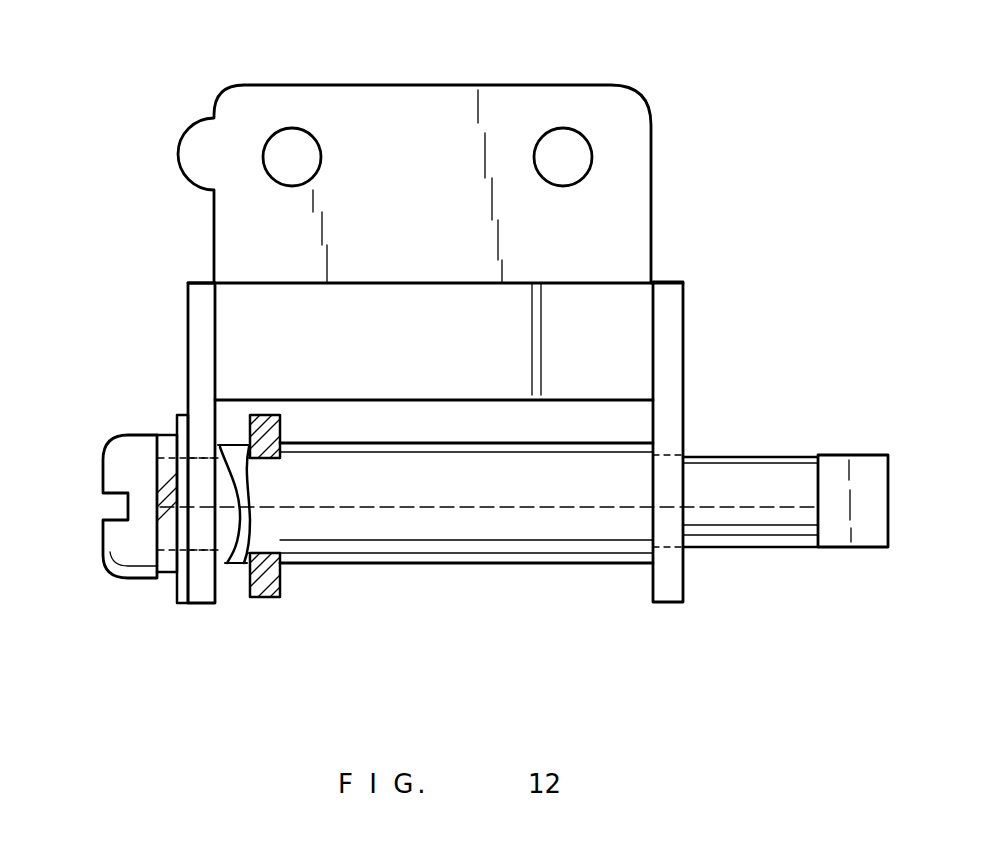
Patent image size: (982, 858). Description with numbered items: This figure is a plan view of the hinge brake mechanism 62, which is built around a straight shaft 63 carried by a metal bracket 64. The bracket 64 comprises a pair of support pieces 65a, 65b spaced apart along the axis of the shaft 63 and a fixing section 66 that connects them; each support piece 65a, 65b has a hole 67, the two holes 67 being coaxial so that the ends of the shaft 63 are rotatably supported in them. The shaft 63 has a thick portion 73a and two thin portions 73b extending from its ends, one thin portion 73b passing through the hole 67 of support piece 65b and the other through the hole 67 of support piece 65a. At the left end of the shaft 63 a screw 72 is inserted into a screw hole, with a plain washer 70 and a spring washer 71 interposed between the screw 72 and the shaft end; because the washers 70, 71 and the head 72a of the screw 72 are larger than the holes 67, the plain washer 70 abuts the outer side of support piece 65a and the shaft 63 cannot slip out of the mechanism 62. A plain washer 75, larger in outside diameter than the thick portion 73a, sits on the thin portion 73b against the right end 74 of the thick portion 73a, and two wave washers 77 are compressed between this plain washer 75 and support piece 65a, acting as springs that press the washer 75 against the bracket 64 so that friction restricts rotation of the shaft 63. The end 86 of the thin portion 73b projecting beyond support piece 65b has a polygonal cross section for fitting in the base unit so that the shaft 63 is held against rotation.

The hinge brake mechanism 62 is at (653, 183).
The shaft 63 is at (478, 565).
The bracket 64 is at (438, 97).
The support piece 65a is at (195, 358).
The support piece 65b is at (673, 365).
The fixing section 66 is at (505, 130).
The hole 67 is at (203, 552).
The plain washer 70 is at (178, 590).
The spring washer 71 is at (168, 437).
The screw 72 is at (100, 528).
The head of screw 72a is at (122, 550).
The thick portion 73a is at (413, 467).
The thin portion 73b is at (283, 520).
The right end of thick portion 74 is at (275, 597).
The plain washer 75 is at (258, 415).
The wave washer 77 is at (241, 566).
The end of thin portion 86 is at (860, 463).